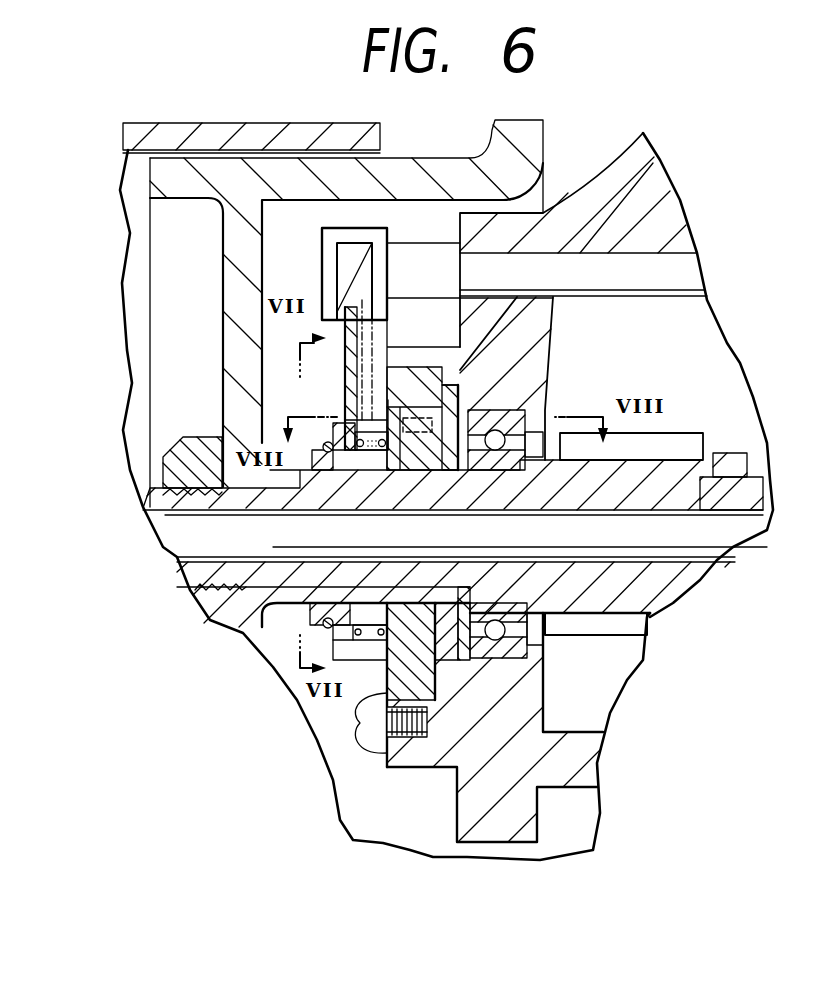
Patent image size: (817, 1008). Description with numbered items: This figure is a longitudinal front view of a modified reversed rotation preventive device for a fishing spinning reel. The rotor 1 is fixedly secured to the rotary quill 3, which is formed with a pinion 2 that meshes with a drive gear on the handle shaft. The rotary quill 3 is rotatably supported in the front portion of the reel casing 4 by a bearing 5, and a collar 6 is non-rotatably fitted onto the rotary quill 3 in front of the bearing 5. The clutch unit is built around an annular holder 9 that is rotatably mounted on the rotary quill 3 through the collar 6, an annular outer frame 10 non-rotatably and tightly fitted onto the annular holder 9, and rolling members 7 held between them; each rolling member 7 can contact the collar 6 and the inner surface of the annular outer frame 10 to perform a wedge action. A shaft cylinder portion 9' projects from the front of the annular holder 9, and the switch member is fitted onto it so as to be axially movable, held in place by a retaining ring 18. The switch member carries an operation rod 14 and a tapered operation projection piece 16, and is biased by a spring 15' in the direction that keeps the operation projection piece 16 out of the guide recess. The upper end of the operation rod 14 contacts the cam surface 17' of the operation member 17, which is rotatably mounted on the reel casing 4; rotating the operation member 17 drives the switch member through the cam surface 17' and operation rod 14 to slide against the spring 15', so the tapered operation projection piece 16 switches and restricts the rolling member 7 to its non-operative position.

The rotor 1 is at (160, 180).
The pinion 2 is at (690, 447).
The rotary quill 3 is at (257, 577).
The reel casing 4 is at (573, 760).
The bearing 5 is at (477, 657).
The collar 6 is at (297, 613).
The rolling members 7 is at (462, 407).
The annular holder 9 is at (427, 558).
The shaft cylinder portion 9' is at (437, 515).
The annular outer frame 10 is at (440, 377).
The operation rod 14 is at (345, 325).
The spring 15' is at (222, 489).
The operation projection piece 16 is at (350, 425).
The operation member 17 is at (613, 267).
The cam surface 17' is at (260, 349).
The retaining ring 18 is at (328, 623).